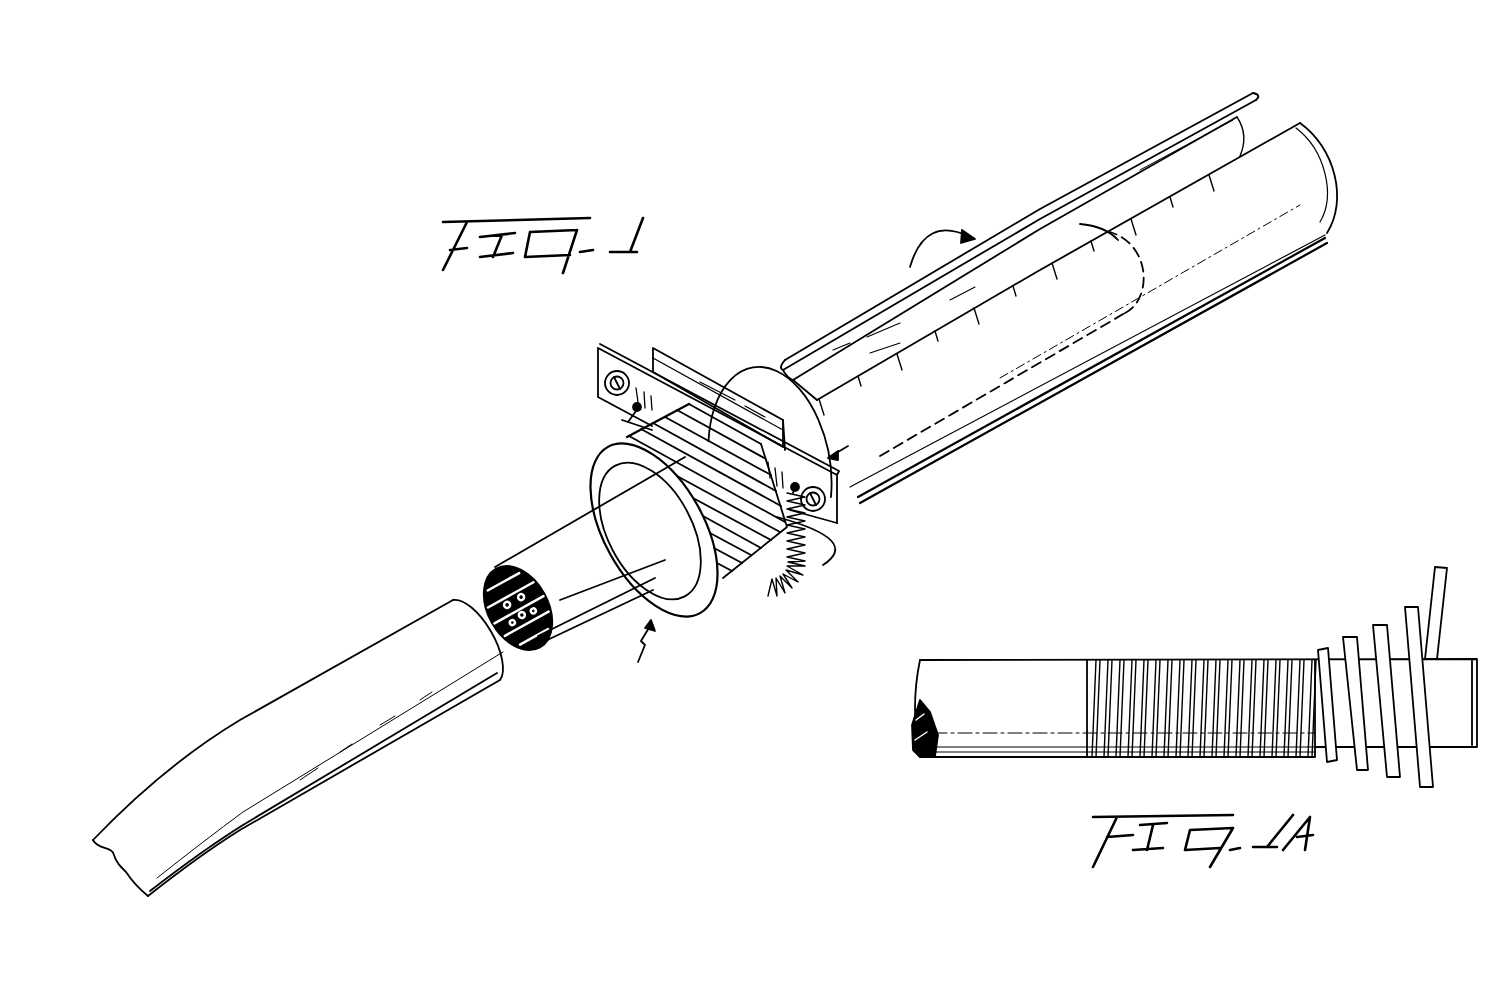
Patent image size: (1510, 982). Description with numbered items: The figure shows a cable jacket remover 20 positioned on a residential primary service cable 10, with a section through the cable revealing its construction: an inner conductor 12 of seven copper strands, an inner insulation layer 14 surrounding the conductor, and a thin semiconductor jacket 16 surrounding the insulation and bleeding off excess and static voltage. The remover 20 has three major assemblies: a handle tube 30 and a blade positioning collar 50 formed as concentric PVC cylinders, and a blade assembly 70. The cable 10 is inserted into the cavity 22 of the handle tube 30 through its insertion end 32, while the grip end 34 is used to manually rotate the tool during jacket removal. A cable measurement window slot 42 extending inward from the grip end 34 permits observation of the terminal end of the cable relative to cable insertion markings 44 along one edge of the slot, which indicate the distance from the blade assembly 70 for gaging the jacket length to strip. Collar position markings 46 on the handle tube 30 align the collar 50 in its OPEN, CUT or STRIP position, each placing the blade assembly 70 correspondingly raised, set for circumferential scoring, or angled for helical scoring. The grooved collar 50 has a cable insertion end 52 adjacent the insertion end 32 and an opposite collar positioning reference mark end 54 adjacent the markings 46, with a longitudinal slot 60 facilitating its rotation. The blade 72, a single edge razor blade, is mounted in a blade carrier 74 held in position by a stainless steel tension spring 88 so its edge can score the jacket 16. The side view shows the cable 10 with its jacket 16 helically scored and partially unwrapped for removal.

In FIG. 1, the primary service cable 10 is at (251, 672).
In FIG. 1A, the primary service cable 10 is at (988, 799).
In FIG. 1, the inner conductor 12 is at (488, 576).
In FIG. 1, the inner insulation layer 14 is at (507, 565).
In FIG. 1, the semiconductor jacket 16 is at (543, 648).
In FIG. 1A, the semiconductor jacket 16 is at (1033, 673).
In FIG. 1, the cable jacket remover 20 is at (1040, 494).
In FIG. 1, the cavity 22 is at (1131, 182).
In FIG. 1, the handle tube 30 is at (1262, 254).
In FIG. 1, the insertion end 32 is at (637, 657).
In FIG. 1, the grip end 34 is at (1342, 185).
In FIG. 1, the cable measurement window slot 42 is at (1262, 96).
In FIG. 1, the cable insertion markings 44 is at (1158, 268).
In FIG. 1, the collar position markings 46 is at (762, 358).
In FIG. 1, the blade positioning collar 50 is at (727, 595).
In FIG. 1, the cable insertion end 52 is at (686, 618).
In FIG. 1, the collar positioning reference mark end 54 is at (822, 548).
In FIG. 1, the longitudinal slot 60 is at (748, 566).
In FIG. 1, the blade assembly 70 is at (836, 518).
In FIG. 1, the blade 72 is at (673, 372).
In FIG. 1, the blade carrier 74 is at (607, 364).
In FIG. 1, the tension spring 88 is at (793, 592).